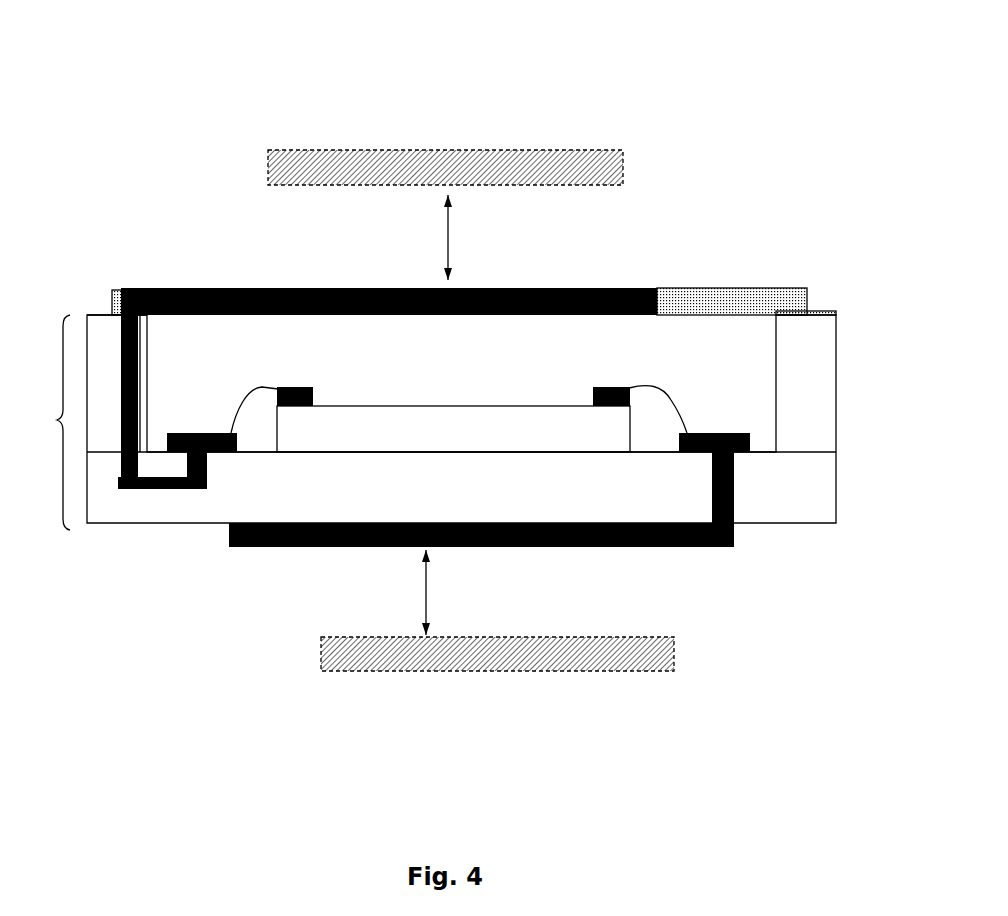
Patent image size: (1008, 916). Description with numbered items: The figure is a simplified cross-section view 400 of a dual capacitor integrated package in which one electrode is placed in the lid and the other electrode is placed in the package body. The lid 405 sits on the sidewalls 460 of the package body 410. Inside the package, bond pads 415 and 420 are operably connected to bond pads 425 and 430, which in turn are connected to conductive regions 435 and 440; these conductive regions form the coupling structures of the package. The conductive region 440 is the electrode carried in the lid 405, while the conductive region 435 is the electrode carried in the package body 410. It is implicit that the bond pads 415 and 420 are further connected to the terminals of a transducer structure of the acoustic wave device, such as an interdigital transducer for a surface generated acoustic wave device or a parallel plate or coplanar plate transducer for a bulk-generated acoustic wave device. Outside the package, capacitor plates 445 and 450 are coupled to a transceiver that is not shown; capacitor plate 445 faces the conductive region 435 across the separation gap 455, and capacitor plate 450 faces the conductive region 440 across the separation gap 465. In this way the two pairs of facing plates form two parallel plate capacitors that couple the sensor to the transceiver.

The perspective view 400 is at (63, 44).
The lid 405 is at (690, 287).
The package body 410 is at (52, 428).
The bond pad 415 is at (602, 385).
The bond pad 420 is at (307, 385).
The bond pad 425 is at (710, 432).
The bond pad 430 is at (193, 432).
The conductive region 435 is at (730, 553).
The conductive region 440 is at (385, 285).
The capacitor plate 445 is at (715, 710).
The capacitor plate 450 is at (628, 167).
The separation gap 455 is at (455, 592).
The sidewalls 460 is at (103, 312).
The separation gap 465 is at (474, 237).